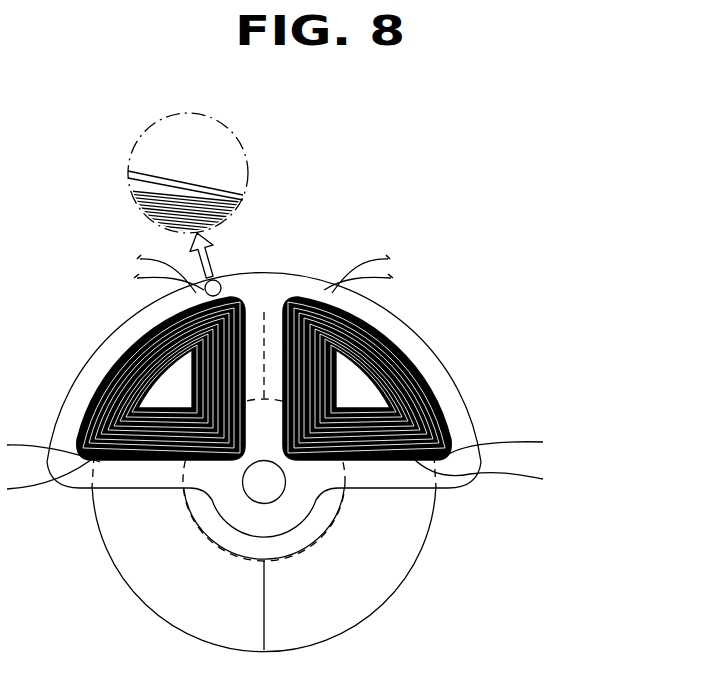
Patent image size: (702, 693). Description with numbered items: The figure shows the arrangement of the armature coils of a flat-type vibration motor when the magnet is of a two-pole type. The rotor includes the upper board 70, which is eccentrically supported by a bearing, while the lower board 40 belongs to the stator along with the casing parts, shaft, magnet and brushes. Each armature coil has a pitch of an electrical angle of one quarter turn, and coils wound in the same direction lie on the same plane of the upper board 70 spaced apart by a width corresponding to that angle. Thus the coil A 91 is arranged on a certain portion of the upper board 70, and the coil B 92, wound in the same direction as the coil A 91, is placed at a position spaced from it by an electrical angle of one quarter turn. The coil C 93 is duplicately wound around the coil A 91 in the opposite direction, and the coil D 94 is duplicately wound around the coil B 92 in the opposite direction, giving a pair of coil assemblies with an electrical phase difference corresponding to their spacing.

The lower board 40 is at (337, 617).
The upper board 70 is at (425, 340).
The coil A 91 is at (143, 176).
The coil B 92 is at (292, 446).
The coil C 93 is at (136, 200).
The coil D 94 is at (292, 476).